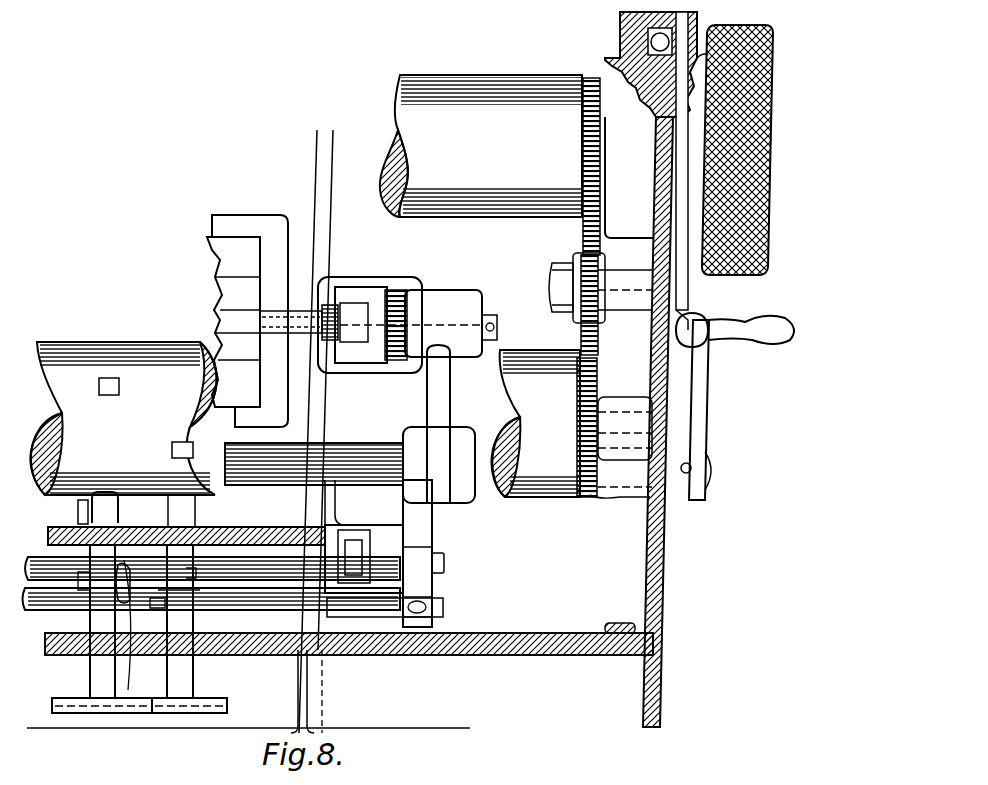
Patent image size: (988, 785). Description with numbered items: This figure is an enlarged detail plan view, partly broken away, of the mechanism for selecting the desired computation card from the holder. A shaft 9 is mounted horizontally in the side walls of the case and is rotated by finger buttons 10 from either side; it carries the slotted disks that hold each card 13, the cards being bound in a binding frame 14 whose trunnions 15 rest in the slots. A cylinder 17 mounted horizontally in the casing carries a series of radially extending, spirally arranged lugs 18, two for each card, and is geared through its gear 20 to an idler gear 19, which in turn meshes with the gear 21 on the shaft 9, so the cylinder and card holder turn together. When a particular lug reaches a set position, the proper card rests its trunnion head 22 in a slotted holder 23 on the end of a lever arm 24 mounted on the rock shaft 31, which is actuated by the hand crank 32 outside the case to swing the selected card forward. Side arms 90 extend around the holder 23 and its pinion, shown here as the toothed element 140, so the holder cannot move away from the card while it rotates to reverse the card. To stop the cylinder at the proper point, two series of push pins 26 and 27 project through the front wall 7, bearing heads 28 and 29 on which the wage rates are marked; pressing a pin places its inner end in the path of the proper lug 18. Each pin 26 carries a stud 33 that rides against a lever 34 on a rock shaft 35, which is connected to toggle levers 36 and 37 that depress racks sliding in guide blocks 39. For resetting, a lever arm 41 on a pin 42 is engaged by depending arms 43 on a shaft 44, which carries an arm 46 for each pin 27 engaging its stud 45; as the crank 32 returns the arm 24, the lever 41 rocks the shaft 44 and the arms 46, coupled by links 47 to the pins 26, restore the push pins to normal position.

The front wall 7 is at (440, 652).
The shaft 9 is at (481, 146).
The finger button 10 is at (770, 172).
The card 13 is at (222, 252).
The binding frame 14 is at (258, 215).
The trunnion 15 is at (320, 304).
The cylinder 17 is at (305, 419).
The lug 18 is at (107, 377).
The idler gear 19 is at (582, 252).
The gear 20 is at (599, 386).
The gear 21 is at (590, 77).
The trunnion head 22 is at (352, 318).
The slotted holder 23 is at (368, 292).
The lever arm 24 is at (446, 402).
The push pin 26 is at (92, 666).
The push pin 27 is at (191, 666).
The head 28 is at (60, 706).
The head 29 is at (226, 706).
The rock shaft 31 is at (714, 470).
The hand crank 32 is at (706, 396).
The stud 33 is at (130, 625).
The lever 34 is at (120, 562).
The rock shaft 35 is at (40, 560).
The toggle lever 36 is at (225, 559).
The toggle lever 37 is at (368, 546).
The guide block 39 is at (342, 526).
The lever arm 41 is at (426, 536).
The pin 42 is at (446, 563).
The depending arm 43 is at (436, 623).
The shaft 44 is at (445, 602).
The stud 45 is at (165, 606).
The arm 46 is at (191, 566).
The link 47 is at (78, 521).
The side arm 90 is at (366, 278).
The gear 140 is at (399, 298).